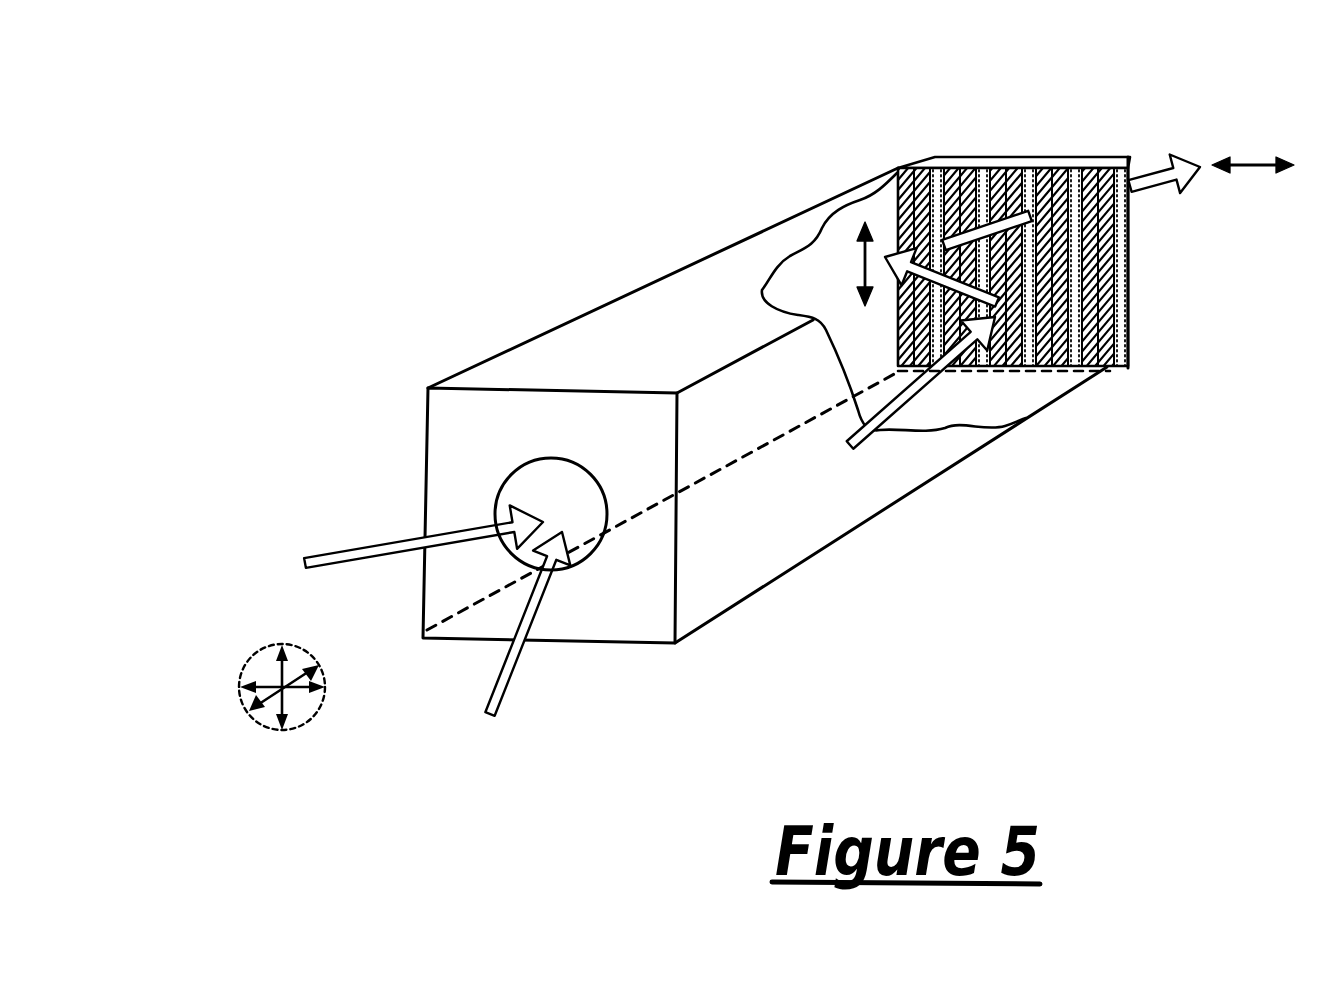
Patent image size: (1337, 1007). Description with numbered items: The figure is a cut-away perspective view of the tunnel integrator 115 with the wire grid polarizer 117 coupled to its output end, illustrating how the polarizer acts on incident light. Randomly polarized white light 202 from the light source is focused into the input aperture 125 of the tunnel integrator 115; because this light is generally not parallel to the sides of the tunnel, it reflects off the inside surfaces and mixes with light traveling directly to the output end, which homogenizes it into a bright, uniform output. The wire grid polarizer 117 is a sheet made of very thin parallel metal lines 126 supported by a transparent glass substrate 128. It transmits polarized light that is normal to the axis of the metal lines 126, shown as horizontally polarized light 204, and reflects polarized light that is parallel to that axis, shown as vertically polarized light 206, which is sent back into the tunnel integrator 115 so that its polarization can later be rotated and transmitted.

The tunnel integrator 115 is at (775, 226).
The wire grid polarizer 117 is at (908, 146).
The input aperture 125 is at (496, 492).
The metal lines 126 is at (1107, 367).
The transparent glass substrate 128 is at (1128, 280).
The randomly polarized white light 202 is at (258, 652).
The horizontally polarized light 204 is at (1253, 170).
The vertically polarized light 206 is at (830, 267).